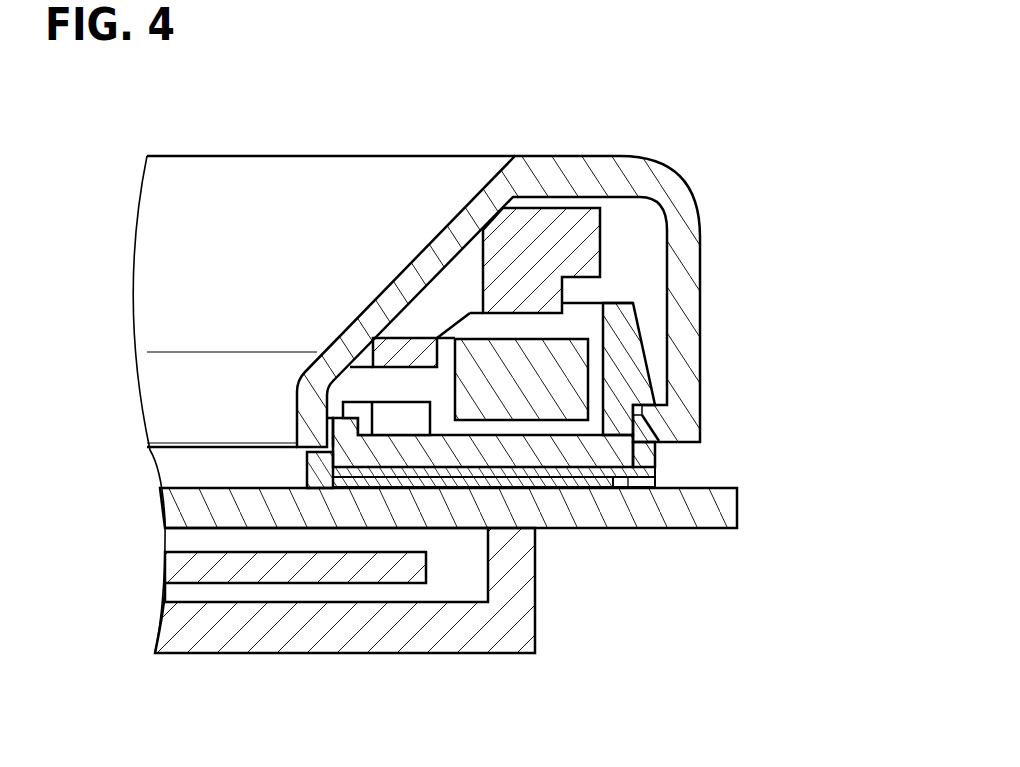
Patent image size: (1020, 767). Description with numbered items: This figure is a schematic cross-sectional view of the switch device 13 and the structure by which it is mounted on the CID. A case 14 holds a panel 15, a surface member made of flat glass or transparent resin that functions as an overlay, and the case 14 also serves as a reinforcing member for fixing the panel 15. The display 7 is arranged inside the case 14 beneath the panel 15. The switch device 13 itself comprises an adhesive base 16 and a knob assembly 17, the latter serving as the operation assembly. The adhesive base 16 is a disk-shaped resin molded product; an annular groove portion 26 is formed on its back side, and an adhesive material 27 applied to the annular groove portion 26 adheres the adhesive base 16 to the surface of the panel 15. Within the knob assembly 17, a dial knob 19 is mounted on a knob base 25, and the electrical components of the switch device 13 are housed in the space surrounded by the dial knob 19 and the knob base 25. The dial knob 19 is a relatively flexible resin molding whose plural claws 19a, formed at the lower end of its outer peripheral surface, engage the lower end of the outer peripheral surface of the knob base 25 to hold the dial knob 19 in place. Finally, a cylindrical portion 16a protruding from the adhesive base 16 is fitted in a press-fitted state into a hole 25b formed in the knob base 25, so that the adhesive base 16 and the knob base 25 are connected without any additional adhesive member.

The display 7 is at (426, 567).
The switch device 13 is at (502, 104).
The case 14 is at (342, 654).
The panel 15 is at (737, 510).
The adhesive base 16 is at (655, 467).
The cylindrical portion 16a is at (307, 470).
The knob assembly 17 is at (728, 190).
The dial knob 19 is at (700, 252).
The claws 19a is at (636, 408).
The knob base 25 is at (640, 332).
The hole 25b is at (327, 426).
The annular groove portion 26 is at (612, 490).
The adhesive material 27 is at (655, 478).